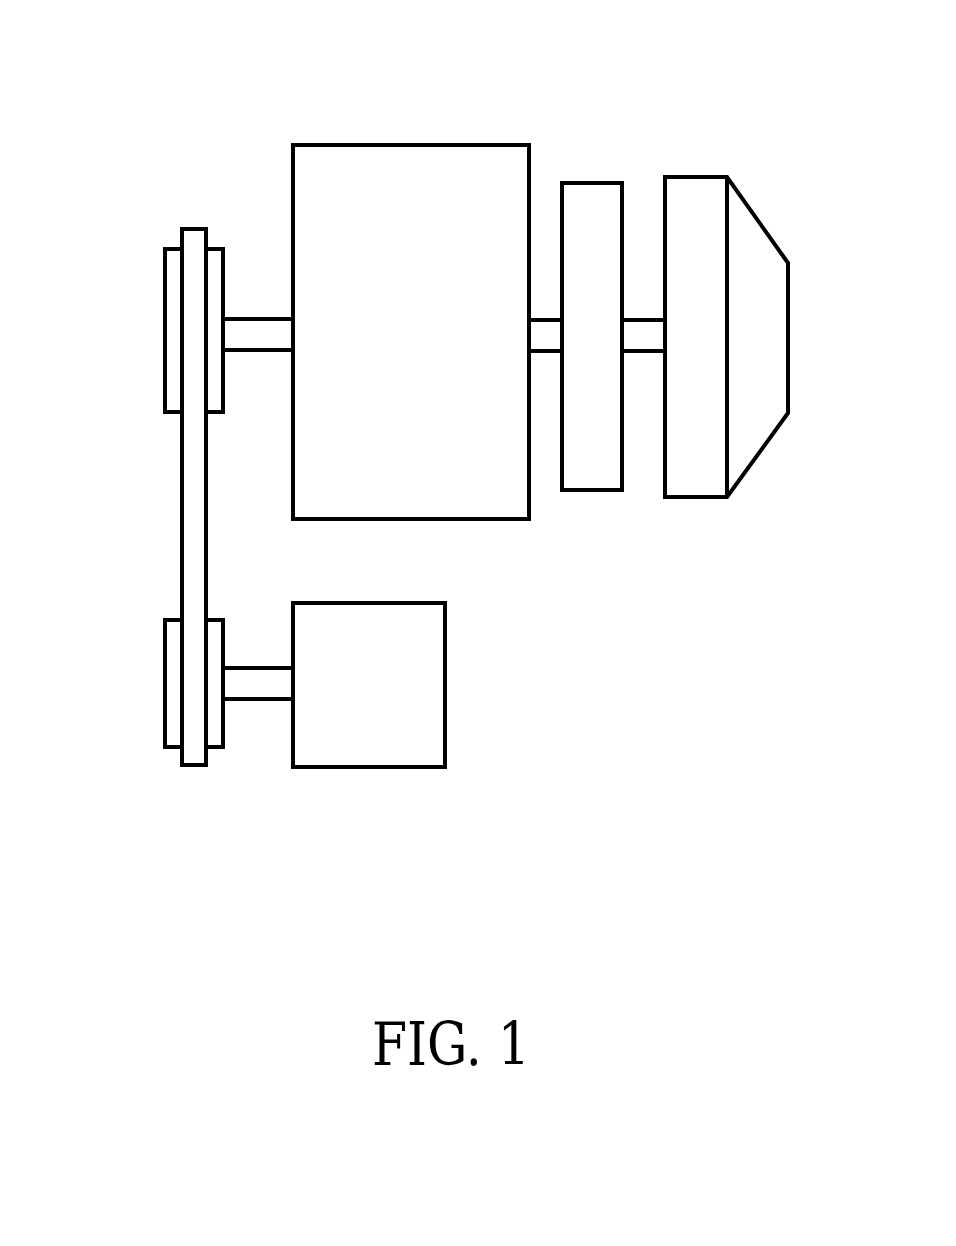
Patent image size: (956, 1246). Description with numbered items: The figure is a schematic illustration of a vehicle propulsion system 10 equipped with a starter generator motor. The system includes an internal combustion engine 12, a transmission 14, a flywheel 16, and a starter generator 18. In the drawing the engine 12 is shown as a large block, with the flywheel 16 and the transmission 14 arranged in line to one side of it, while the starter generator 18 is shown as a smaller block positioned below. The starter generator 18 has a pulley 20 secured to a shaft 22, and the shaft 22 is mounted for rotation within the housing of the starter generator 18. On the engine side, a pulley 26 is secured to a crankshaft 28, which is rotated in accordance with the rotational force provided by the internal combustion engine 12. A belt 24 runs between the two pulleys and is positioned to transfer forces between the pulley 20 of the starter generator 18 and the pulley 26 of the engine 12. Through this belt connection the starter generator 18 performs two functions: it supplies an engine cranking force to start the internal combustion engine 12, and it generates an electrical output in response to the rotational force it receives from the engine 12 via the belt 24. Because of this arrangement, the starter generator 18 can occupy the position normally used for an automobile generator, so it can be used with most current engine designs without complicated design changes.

The vehicle propulsion system 10 is at (614, 124).
The internal combustion engine 12 is at (407, 145).
The transmission 14 is at (765, 453).
The flywheel 16 is at (597, 477).
The starter generator 18 is at (458, 691).
The pulley 20 is at (222, 618).
The shaft 22 is at (257, 707).
The belt 24 is at (180, 495).
The pulley 26 is at (226, 247).
The crankshaft 28 is at (271, 318).